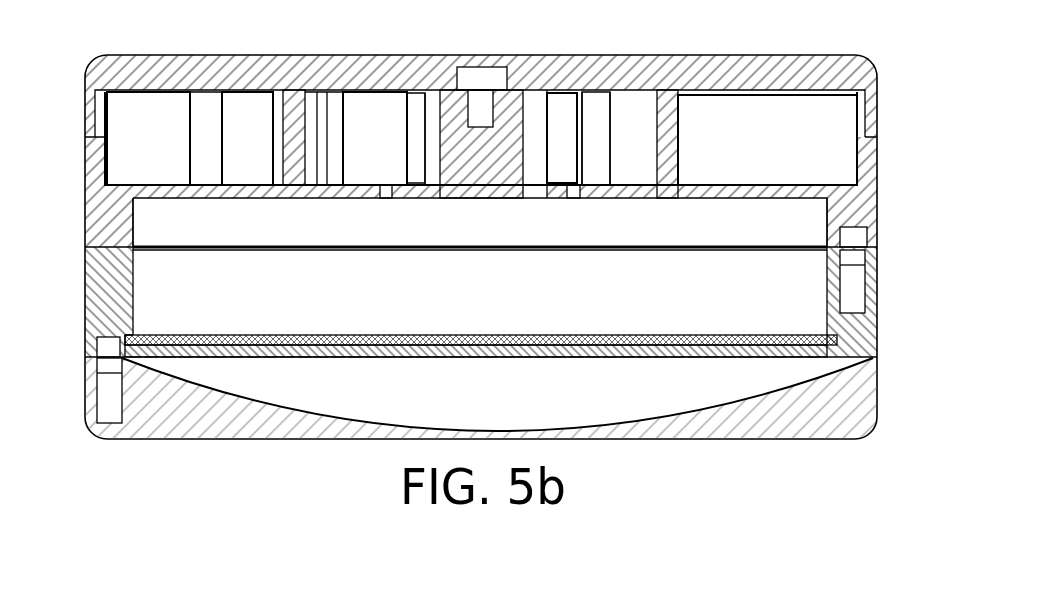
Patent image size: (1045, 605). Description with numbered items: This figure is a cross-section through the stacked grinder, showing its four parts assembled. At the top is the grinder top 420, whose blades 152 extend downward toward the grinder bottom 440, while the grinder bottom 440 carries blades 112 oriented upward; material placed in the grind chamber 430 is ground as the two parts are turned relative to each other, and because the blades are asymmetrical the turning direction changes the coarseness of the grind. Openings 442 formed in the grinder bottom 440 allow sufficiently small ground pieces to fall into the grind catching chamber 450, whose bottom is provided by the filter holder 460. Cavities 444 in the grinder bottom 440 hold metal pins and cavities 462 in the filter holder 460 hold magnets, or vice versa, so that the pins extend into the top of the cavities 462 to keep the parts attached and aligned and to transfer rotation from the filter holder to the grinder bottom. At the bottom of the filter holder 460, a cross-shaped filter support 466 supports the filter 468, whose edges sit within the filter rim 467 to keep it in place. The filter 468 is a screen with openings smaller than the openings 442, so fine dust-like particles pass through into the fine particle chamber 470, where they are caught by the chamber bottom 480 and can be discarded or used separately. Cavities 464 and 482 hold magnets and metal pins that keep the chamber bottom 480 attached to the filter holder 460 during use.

The blades 152 is at (368, 112).
The grinder top 420 is at (735, 73).
The grind chamber 430 is at (798, 107).
The blades 112 is at (673, 145).
The grinder bottom 440 is at (860, 200).
The openings 442 is at (372, 192).
The cavities 444 is at (858, 237).
The grind catching chamber 450 is at (147, 228).
The filter holder 460 is at (862, 338).
The cavities 462 is at (855, 290).
The cavities 464 is at (102, 343).
The filter support 466 is at (363, 358).
The filter rim 467 is at (128, 337).
The filter 468 is at (268, 337).
The fine particle chamber 470 is at (627, 393).
The chamber bottom 480 is at (855, 412).
The cavities 482 is at (110, 413).